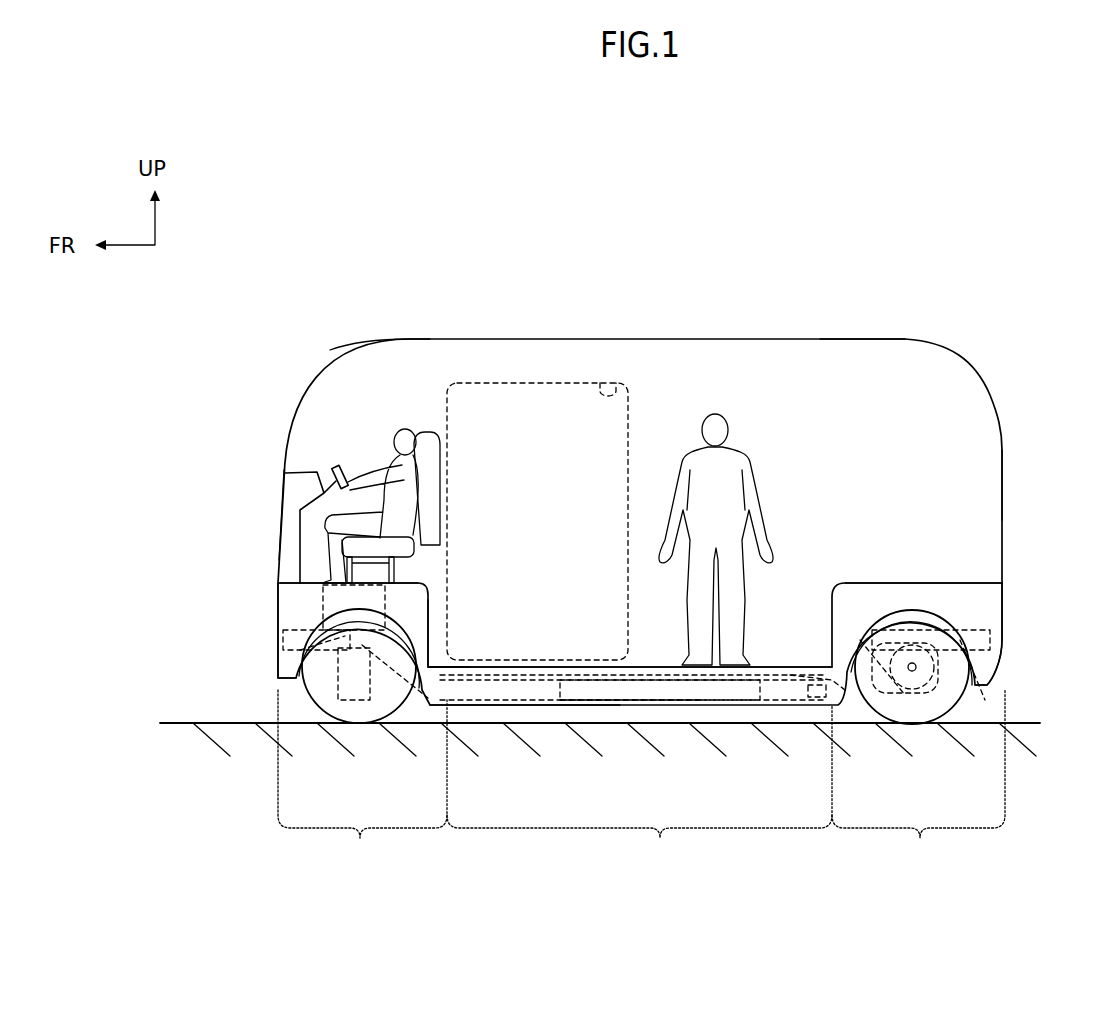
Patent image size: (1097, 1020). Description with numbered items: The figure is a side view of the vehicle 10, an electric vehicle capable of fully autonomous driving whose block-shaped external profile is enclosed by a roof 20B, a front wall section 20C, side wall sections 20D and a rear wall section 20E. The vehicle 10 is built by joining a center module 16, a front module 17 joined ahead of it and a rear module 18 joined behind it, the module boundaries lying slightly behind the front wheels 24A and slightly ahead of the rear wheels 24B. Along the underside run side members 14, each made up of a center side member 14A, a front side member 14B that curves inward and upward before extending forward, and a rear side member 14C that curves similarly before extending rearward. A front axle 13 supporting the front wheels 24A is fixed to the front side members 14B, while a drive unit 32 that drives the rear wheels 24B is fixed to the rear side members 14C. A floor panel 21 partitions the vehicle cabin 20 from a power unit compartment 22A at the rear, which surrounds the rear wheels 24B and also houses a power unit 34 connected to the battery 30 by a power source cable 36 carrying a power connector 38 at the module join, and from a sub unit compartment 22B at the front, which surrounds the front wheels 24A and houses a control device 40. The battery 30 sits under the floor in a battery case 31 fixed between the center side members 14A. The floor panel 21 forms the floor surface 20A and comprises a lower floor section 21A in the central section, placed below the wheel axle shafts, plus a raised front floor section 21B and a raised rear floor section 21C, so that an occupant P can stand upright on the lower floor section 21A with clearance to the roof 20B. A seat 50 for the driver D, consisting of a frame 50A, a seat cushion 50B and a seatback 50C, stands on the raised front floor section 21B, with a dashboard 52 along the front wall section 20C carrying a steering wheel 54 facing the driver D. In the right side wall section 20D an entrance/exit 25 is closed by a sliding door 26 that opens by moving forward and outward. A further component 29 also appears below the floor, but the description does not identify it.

The vehicle 10 is at (820, 254).
The front axle 13 is at (337, 714).
The side members 14 is at (423, 712).
The center side member 14A is at (815, 706).
The front side member 14B is at (318, 650).
The rear side member 14C is at (985, 702).
The center module 16 is at (639, 788).
The front module 17 is at (362, 780).
The rear module 18 is at (918, 780).
The vehicle cabin 20 is at (563, 366).
The floor surface 20A is at (560, 670).
The roof 20B is at (385, 340).
The front wall section 20C is at (282, 512).
The side wall section 20D is at (852, 358).
The rear wall section 20E is at (1003, 460).
The floor panel 21 is at (480, 667).
The lower floor section 21A is at (437, 667).
The raised front floor section 21B is at (300, 580).
The raised rear floor section 21C is at (991, 585).
The power unit compartment 22A is at (974, 611).
The sub unit compartment 22B is at (302, 610).
The front wheels 24A is at (387, 712).
The rear wheels 24B is at (907, 714).
The entrance/exit 25 is at (611, 386).
The sliding door 26 is at (489, 400).
The under-floor member 29 is at (473, 706).
The battery 30 is at (645, 692).
The battery case 31 is at (612, 706).
The drive unit 32 is at (918, 695).
The power unit 34 is at (935, 600).
The power source cable 36 is at (880, 704).
The power connector 38 is at (819, 708).
The control device 40 is at (320, 603).
The seat 50 is at (537, 440).
The frame 50A is at (406, 546).
The seat cushion 50B is at (378, 546).
The seatback 50C is at (441, 470).
The dashboard 52 is at (305, 475).
The steering wheel 54 is at (340, 470).
The driver D is at (399, 425).
The occupant P is at (716, 414).